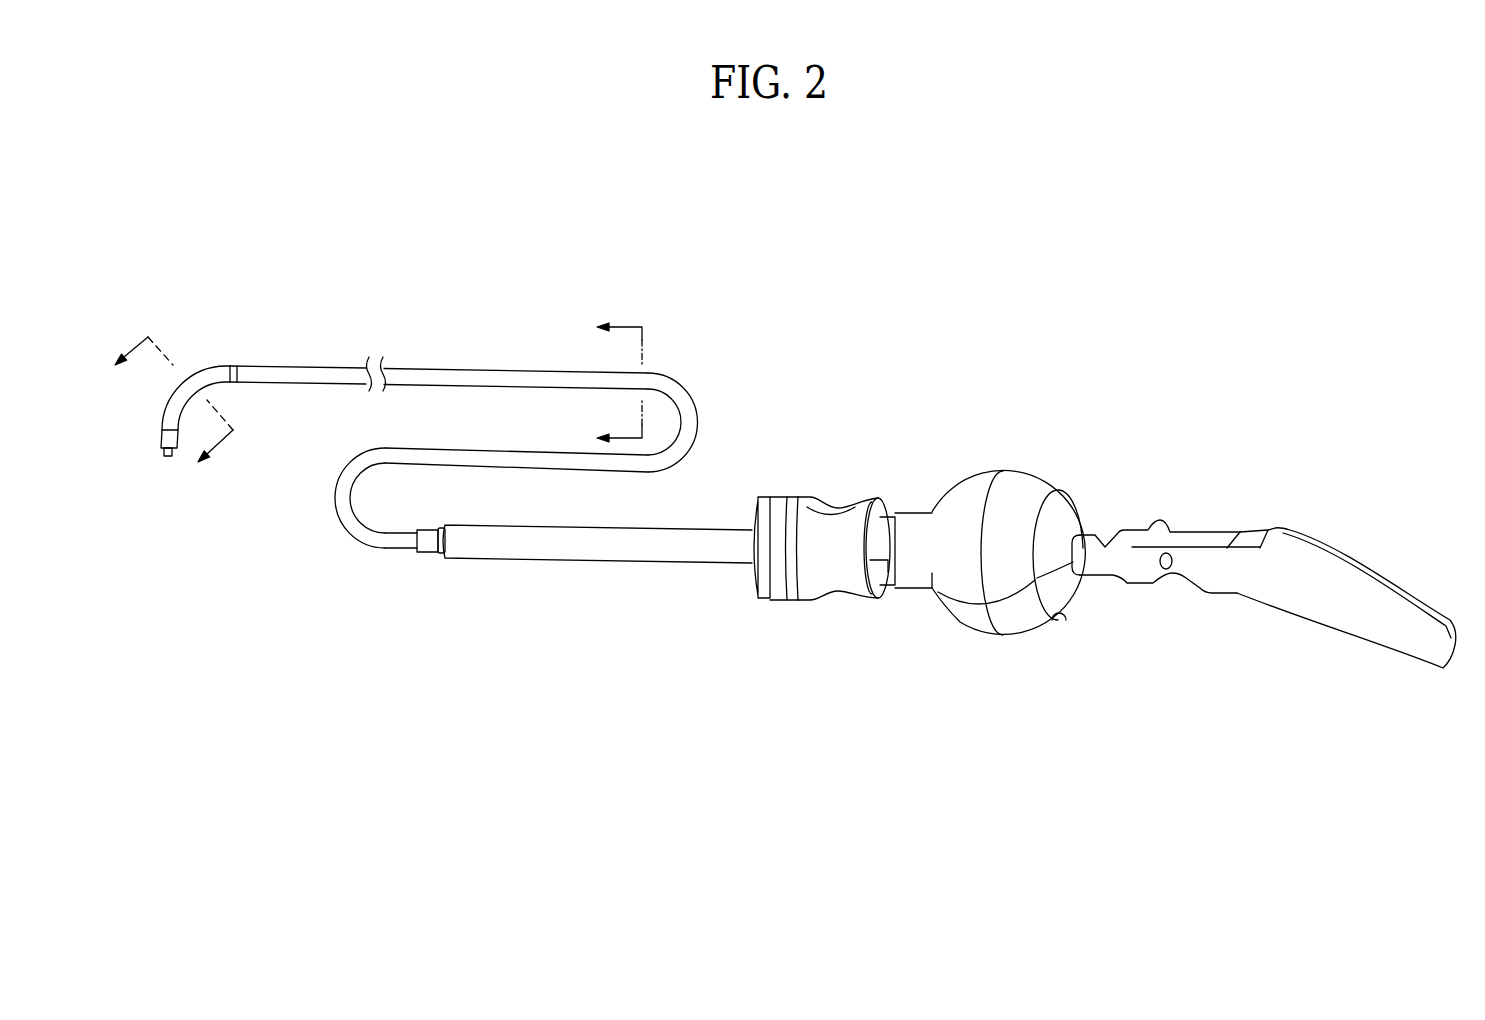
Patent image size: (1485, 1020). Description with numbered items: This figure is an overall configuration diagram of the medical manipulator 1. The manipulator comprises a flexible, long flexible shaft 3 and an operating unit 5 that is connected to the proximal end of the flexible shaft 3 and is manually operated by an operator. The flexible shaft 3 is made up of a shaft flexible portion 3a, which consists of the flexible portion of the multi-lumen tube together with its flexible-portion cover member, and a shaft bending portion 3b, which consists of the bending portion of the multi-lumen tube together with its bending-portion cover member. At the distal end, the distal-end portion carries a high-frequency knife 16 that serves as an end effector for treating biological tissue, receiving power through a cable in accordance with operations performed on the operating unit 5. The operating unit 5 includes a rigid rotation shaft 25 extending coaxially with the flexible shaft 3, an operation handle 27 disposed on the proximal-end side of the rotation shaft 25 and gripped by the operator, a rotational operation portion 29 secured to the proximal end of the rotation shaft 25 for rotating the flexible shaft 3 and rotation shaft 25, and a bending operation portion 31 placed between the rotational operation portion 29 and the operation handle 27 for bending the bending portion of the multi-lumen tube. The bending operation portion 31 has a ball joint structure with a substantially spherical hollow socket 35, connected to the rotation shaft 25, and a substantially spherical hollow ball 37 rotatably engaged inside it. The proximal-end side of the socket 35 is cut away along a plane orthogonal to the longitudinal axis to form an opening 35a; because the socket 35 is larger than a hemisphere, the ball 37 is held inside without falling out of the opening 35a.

The medical manipulator 1 is at (1000, 235).
The flexible shaft 3 is at (447, 297).
The shaft flexible portion 3a is at (511, 351).
The shaft bending portion 3b is at (198, 348).
The high-frequency knife 16 is at (168, 457).
The rotation shaft 25 is at (596, 563).
The operating unit 5 is at (971, 400).
The rotational operation portion 29 is at (833, 595).
The bending operation portion 31 is at (1158, 392).
The socket 35 is at (1023, 488).
The opening 35a is at (1067, 608).
The ball 37 is at (1062, 518).
The operation handle 27 is at (1357, 550).